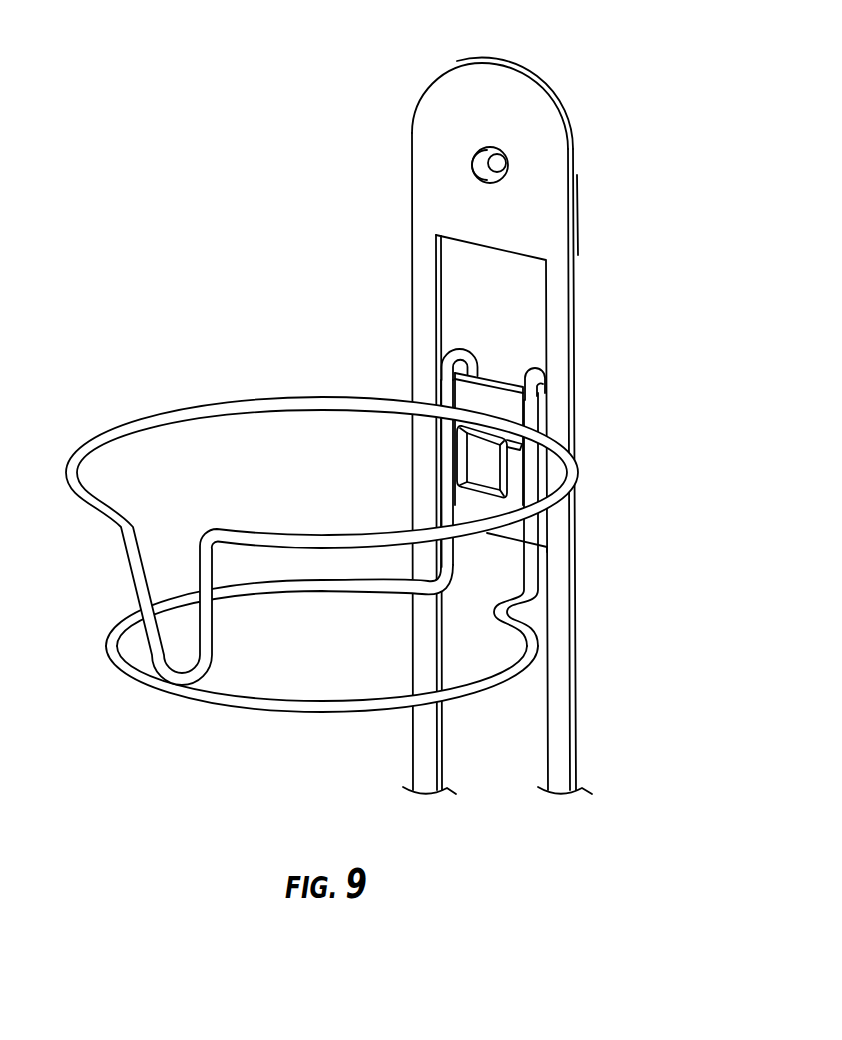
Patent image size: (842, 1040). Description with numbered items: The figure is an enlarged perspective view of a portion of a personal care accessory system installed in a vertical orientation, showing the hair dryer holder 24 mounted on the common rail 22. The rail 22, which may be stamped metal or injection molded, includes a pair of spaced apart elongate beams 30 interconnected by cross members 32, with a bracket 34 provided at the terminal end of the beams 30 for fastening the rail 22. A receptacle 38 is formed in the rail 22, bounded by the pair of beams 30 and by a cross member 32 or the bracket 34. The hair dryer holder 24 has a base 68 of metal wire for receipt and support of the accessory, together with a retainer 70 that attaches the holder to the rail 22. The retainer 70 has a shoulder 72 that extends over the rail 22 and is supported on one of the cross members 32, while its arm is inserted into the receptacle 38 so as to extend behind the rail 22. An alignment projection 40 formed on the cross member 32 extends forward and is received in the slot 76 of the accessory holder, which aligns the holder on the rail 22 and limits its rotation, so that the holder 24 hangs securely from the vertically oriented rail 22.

The rail 22 is at (544, 442).
The hair dryer holder 24 is at (153, 413).
The elongate beams 30 is at (582, 785).
The cross members 32 is at (501, 378).
The bracket 34 is at (452, 100).
The receptacle 38 is at (443, 765).
The alignment projection 40 is at (513, 478).
The base 68 is at (227, 698).
The retainer 70 is at (440, 373).
The shoulder 72 is at (458, 350).
The slot 76 is at (452, 460).